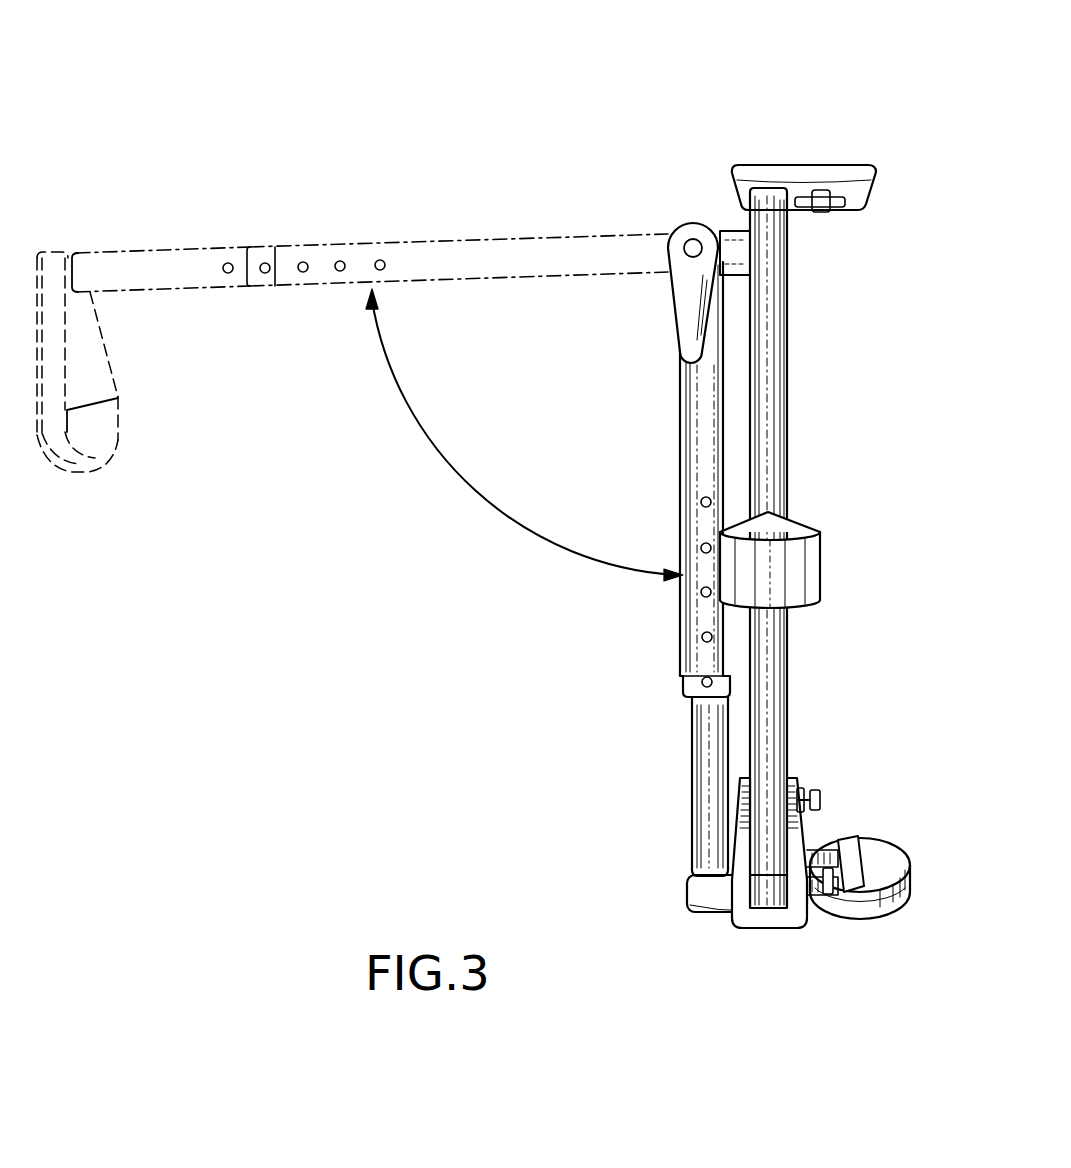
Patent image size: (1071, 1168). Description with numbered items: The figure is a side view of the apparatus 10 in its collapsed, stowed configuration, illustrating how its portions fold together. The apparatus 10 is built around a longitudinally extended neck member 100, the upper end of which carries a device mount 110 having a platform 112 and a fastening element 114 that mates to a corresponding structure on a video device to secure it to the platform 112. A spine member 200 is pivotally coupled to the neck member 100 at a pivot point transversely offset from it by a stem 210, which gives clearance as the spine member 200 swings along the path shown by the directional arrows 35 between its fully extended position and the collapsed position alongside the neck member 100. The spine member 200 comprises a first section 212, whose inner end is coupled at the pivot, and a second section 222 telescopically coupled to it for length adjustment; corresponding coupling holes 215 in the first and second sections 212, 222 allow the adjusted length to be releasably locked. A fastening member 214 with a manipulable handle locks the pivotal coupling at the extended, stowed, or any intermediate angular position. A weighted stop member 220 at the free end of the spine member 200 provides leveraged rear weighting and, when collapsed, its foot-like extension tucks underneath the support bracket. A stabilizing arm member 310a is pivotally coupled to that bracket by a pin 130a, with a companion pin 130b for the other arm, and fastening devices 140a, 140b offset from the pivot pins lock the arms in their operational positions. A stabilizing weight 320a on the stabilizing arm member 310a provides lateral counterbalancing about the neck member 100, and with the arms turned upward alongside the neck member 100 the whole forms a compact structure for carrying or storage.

The apparatus 10 is at (684, 28).
The neck member 100 is at (789, 358).
The device mount 110 is at (792, 172).
The platform 112 is at (873, 193).
The fastening element 114 is at (820, 210).
The spine member 200 is at (669, 231).
The stem 210 is at (728, 247).
The first section 212 is at (693, 395).
The fastening member 214 is at (697, 292).
The coupling holes 215 is at (703, 502).
The second section 222 is at (715, 812).
The weighted stop member 220 is at (883, 843).
The directional arrows 35 is at (412, 415).
The stabilizing weight 320a is at (750, 578).
The stabilizing arm member 310a is at (765, 725).
The pin 130a is at (850, 845).
The pin 130b is at (820, 817).
The fastening device 140a is at (826, 895).
The fastening device 140b is at (815, 790).